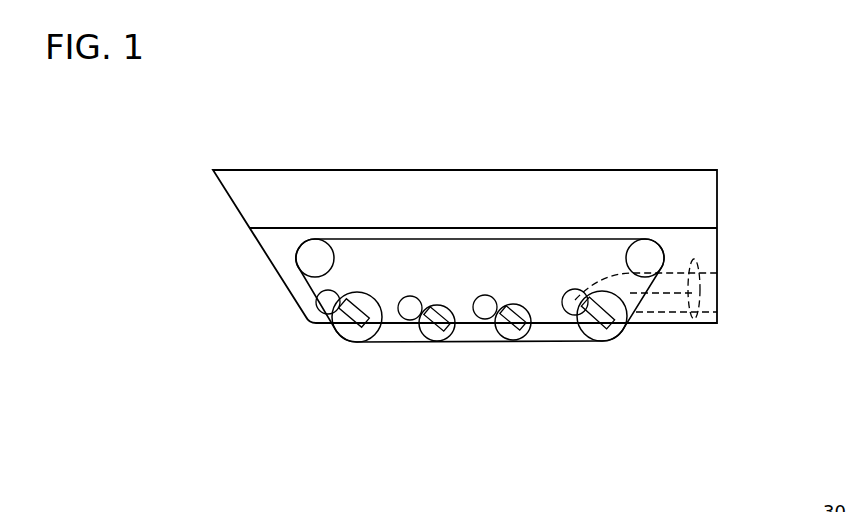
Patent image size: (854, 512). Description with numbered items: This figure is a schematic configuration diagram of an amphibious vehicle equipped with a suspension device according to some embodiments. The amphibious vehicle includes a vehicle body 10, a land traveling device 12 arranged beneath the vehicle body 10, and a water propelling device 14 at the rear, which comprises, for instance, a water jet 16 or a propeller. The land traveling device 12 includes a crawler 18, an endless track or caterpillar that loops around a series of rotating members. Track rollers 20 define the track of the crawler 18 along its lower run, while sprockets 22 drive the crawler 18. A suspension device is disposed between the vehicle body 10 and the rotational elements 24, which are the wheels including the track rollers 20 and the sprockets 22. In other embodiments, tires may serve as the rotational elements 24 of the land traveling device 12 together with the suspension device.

The vehicle body 10 is at (618, 170).
The land traveling device 12 is at (557, 346).
The water propelling device 14 is at (697, 315).
The water jet 16 is at (698, 263).
The crawler 18 is at (388, 343).
The track rollers 20 is at (457, 343).
The sprockets 22 is at (290, 265).
The rotational elements 24 is at (407, 345).